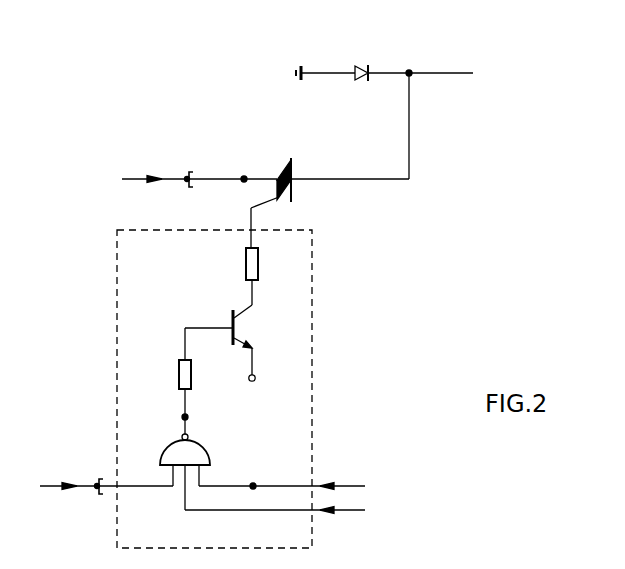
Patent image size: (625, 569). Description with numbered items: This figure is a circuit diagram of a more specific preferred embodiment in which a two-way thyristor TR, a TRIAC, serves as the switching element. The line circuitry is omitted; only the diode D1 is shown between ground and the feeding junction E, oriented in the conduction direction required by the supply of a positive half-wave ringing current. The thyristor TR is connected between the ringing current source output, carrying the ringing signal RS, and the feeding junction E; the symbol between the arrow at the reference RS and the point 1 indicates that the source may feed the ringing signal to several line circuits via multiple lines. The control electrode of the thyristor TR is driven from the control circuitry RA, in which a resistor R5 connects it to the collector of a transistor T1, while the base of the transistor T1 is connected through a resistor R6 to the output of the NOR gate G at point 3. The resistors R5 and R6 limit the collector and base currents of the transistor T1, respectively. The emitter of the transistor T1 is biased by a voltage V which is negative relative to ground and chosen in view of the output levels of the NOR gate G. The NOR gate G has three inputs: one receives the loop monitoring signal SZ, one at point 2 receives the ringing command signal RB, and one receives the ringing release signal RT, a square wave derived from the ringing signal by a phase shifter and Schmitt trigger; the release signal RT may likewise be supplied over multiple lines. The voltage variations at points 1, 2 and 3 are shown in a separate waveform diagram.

The diode D1 is at (352, 61).
The feeding junction E is at (437, 111).
The ringing signal RS is at (183, 168).
The point 1 is at (258, 164).
The two-way thyristor TR is at (330, 190).
The control network RA is at (103, 277).
The resistor R5 is at (235, 276).
The transistor T1 is at (234, 340).
The voltage V is at (253, 392).
The resistor R6 is at (169, 372).
The point 3 is at (194, 419).
The NOR gate G is at (174, 472).
The ringing release signal RT is at (106, 474).
The point 2 is at (255, 471).
The loop monitoring signal SZ is at (338, 471).
The ringing command signal RB is at (275, 524).